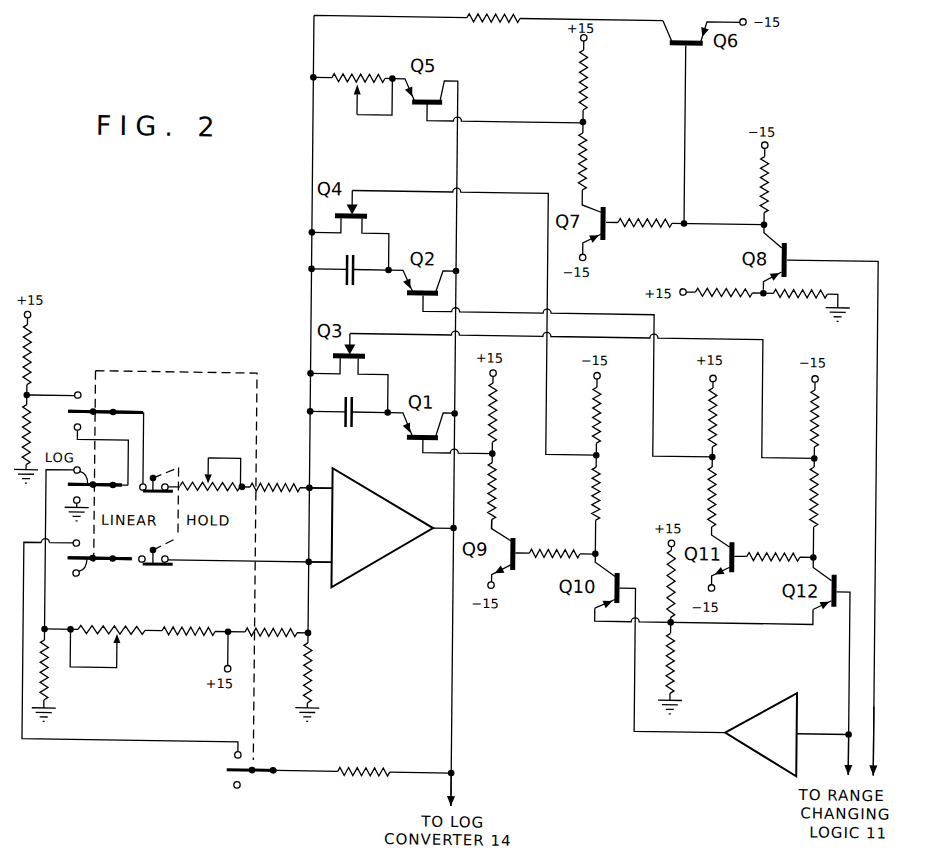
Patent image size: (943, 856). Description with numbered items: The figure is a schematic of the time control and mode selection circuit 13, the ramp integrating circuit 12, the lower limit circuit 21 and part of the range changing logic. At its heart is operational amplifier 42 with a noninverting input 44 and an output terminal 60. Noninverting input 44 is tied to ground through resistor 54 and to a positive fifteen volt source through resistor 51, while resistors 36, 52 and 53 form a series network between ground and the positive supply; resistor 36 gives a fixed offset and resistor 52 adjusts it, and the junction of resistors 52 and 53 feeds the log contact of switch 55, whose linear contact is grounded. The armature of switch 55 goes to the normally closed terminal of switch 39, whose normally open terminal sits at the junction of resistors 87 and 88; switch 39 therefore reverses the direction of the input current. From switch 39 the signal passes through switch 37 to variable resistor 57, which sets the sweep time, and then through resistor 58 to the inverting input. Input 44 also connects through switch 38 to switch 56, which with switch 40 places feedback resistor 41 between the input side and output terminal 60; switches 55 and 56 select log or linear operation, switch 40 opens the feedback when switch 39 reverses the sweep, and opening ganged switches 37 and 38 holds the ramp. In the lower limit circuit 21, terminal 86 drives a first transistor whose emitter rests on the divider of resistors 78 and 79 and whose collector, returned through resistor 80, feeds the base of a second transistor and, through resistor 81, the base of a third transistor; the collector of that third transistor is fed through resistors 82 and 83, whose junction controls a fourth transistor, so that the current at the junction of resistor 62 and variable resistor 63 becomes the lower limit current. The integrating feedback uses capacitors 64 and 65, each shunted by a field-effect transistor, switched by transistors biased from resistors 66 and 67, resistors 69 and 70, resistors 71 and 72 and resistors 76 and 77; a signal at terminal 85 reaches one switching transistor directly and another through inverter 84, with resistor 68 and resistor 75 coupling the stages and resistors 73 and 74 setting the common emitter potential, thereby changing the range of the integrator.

The ramp integrating circuit 12 is at (552, 695).
The time control and mode selection circuit 13 is at (137, 709).
The lower limit circuit 21 is at (509, 90).
The resistor 36 is at (195, 635).
The switch 37 is at (143, 503).
The switch 38 is at (158, 574).
The switch 39 is at (90, 411).
The switch 40 is at (260, 768).
The feedback resistor 41 is at (315, 499).
The operational amplifier 42 is at (374, 504).
The noninverting input 44 is at (316, 558).
The resistor 51 is at (275, 635).
The resistor 52 is at (118, 635).
The resistor 53 is at (51, 684).
The resistor 54 is at (315, 665).
The switch 55 is at (90, 474).
The switch 56 is at (82, 568).
The variable resistor 57 is at (203, 476).
The resistor 58 is at (274, 486).
The output terminal 60 is at (455, 802).
The resistor 62 is at (492, 23).
The variable resistor 63 is at (365, 75).
The capacitor 64 is at (354, 289).
The capacitor 65 is at (357, 432).
The resistor 66 is at (499, 422).
The resistor 67 is at (499, 497).
The resistor 68 is at (558, 544).
The resistor 69 is at (604, 496).
The resistor 70 is at (604, 417).
The resistor 71 is at (717, 418).
The resistor 72 is at (722, 497).
The resistor 73 is at (667, 569).
The resistor 74 is at (679, 664).
The resistor 75 is at (775, 542).
The resistor 76 is at (820, 496).
The resistor 77 is at (820, 419).
The resistor 78 is at (722, 300).
The resistor 79 is at (796, 302).
The resistor 80 is at (769, 181).
The resistor 81 is at (648, 211).
The resistor 82 is at (587, 159).
The resistor 83 is at (587, 87).
The inverter 84 is at (774, 710).
The terminal 85 is at (849, 768).
The terminal 86 is at (878, 765).
The resistor 87 is at (33, 361).
The resistor 88 is at (32, 445).